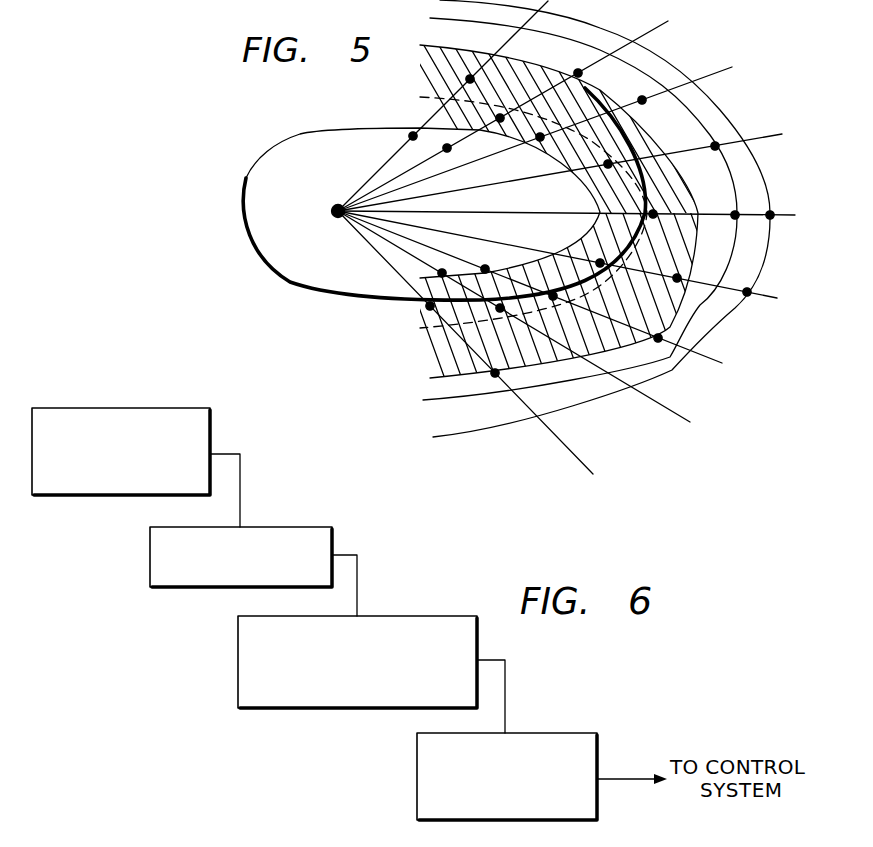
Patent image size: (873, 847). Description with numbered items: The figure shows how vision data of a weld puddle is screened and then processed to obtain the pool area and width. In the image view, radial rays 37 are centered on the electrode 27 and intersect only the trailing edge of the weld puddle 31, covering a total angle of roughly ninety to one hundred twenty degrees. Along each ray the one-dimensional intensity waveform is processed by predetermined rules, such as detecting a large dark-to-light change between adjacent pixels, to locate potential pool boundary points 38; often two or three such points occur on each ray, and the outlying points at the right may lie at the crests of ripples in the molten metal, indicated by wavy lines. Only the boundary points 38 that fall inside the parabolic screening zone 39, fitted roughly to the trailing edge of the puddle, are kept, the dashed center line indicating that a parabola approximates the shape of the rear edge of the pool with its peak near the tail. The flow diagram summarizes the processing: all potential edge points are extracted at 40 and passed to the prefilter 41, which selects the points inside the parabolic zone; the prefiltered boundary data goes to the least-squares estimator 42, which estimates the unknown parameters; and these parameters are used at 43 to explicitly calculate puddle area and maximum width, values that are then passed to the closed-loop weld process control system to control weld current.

In FIG. 5, the electrode 27 is at (332, 206).
In FIG. 5, the weld puddle 31 is at (246, 215).
In FIG. 5, the radial rays 37 is at (372, 174).
In FIG. 5, the potential pool boundary points 38 is at (580, 70).
In FIG. 5, the parabolic screening zone 39 is at (433, 368).
In FIG. 6, the extract all potential edge points step 40 is at (213, 424).
In FIG. 6, the prefilter 41 is at (310, 527).
In FIG. 6, the least-squares estimator 42 is at (430, 616).
In FIG. 6, the calculate pool area and width step 43 is at (573, 733).